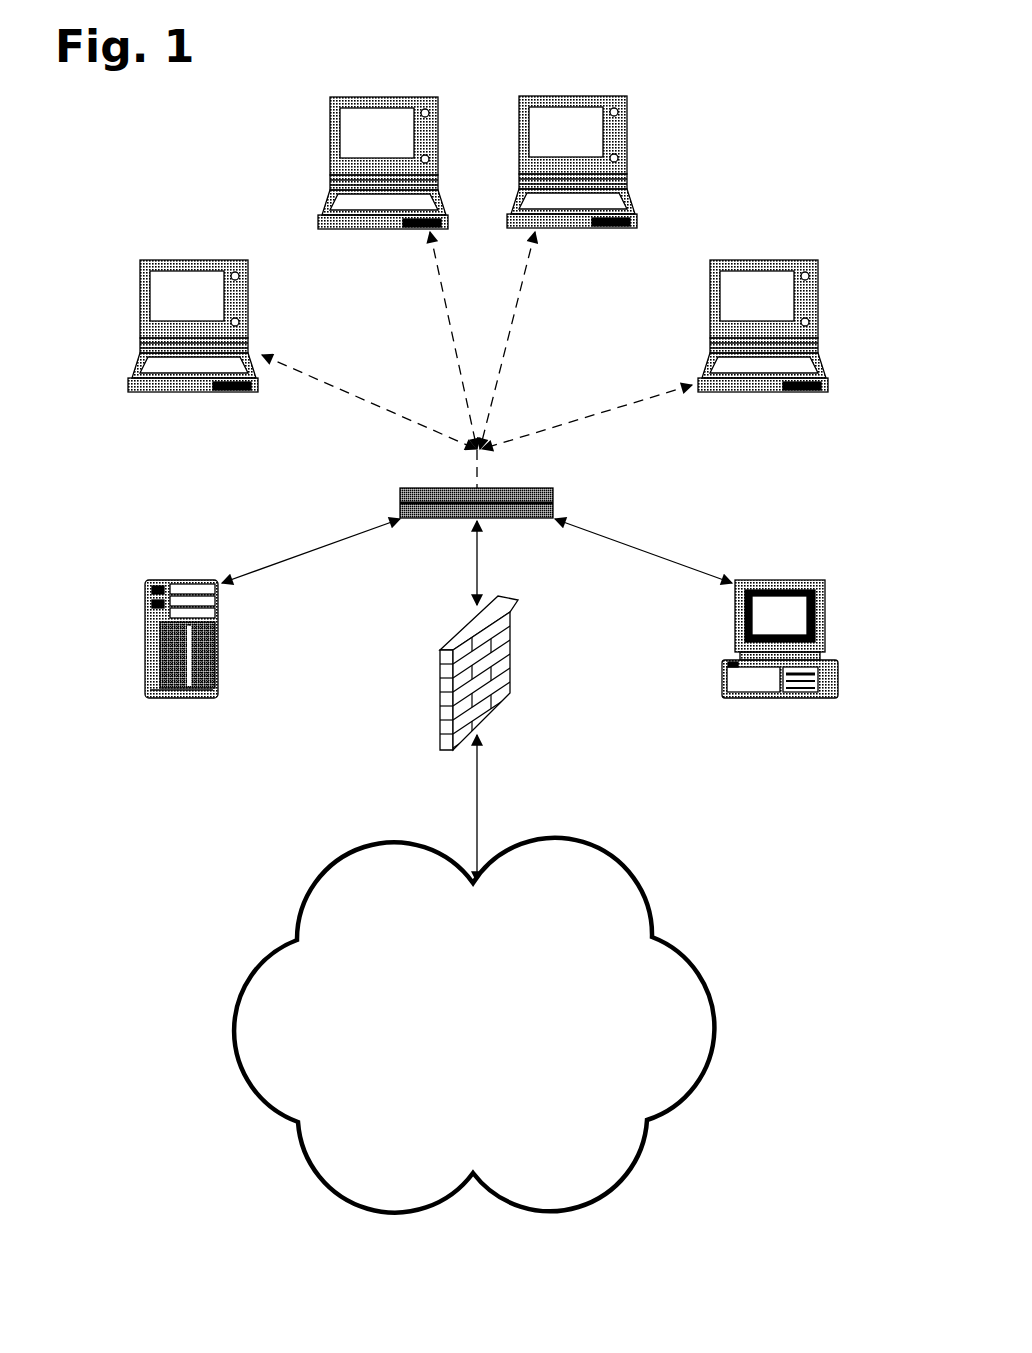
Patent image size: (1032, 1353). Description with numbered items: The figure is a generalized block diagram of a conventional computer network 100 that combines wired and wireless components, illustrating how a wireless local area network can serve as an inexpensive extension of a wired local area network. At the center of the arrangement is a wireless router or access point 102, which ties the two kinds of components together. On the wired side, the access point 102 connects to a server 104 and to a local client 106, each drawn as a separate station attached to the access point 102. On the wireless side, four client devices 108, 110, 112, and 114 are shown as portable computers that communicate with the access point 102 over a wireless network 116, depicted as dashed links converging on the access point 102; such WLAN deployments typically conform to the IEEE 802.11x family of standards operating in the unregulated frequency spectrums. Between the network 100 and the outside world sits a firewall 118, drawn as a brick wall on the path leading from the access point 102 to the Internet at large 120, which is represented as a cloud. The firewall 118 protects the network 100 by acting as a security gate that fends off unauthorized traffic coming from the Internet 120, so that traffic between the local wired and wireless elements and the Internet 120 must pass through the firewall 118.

The network 100 is at (720, 152).
The wireless router or access point 102 is at (552, 488).
The server 104 is at (217, 682).
The local client 106 is at (788, 582).
The client device 108 is at (143, 270).
The client device 110 is at (355, 100).
The client device 112 is at (613, 102).
The client device 114 is at (813, 290).
The wireless network 116 is at (537, 338).
The firewall 118 is at (445, 703).
The Internet 120 is at (457, 1052).